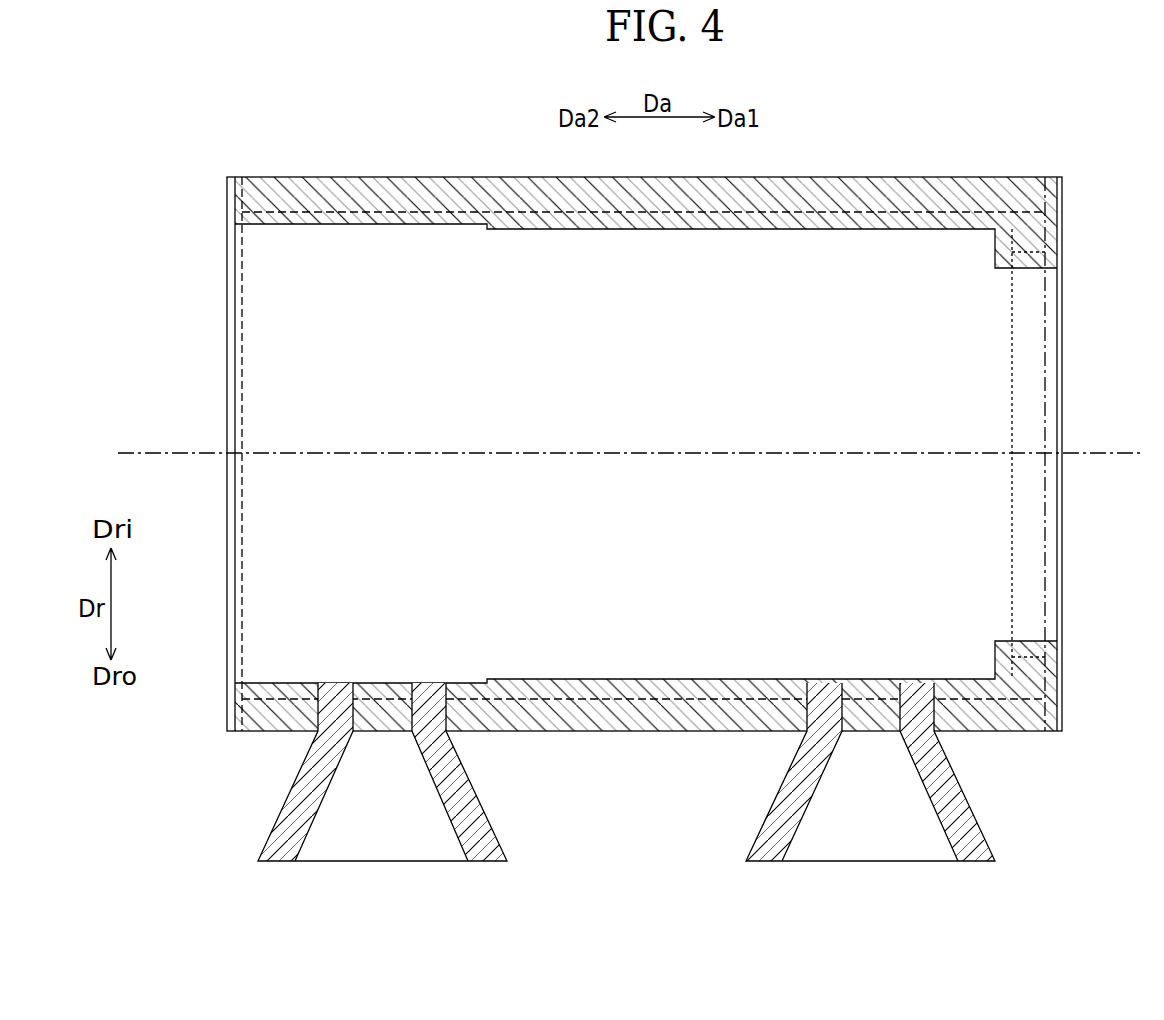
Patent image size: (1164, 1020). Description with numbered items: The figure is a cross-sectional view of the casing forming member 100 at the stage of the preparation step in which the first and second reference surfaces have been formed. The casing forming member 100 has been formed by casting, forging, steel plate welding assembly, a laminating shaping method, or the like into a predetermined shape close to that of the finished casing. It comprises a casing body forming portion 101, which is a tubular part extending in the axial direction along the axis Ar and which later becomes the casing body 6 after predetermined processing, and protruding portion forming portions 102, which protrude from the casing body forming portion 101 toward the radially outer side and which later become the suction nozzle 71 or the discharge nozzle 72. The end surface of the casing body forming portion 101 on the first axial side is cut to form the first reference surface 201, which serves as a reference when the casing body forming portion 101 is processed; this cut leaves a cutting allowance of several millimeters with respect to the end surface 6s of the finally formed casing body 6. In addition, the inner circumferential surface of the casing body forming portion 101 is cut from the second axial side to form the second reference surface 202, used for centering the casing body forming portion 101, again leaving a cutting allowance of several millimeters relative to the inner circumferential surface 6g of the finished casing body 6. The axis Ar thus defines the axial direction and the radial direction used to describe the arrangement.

The casing forming member 100 is at (936, 147).
The casing body forming portion 101 is at (812, 188).
The casing body 6 is at (644, 410).
The inner circumferential surface 6g is at (708, 213).
The end surface 6s is at (1047, 239).
The first reference surface 201 is at (1062, 205).
The second reference surface 202 is at (302, 225).
The protruding portion forming portion 102 is at (702, 772).
The suction nozzle 71 is at (474, 797).
The discharge nozzle 72 is at (953, 795).
The axis Ar is at (1080, 453).